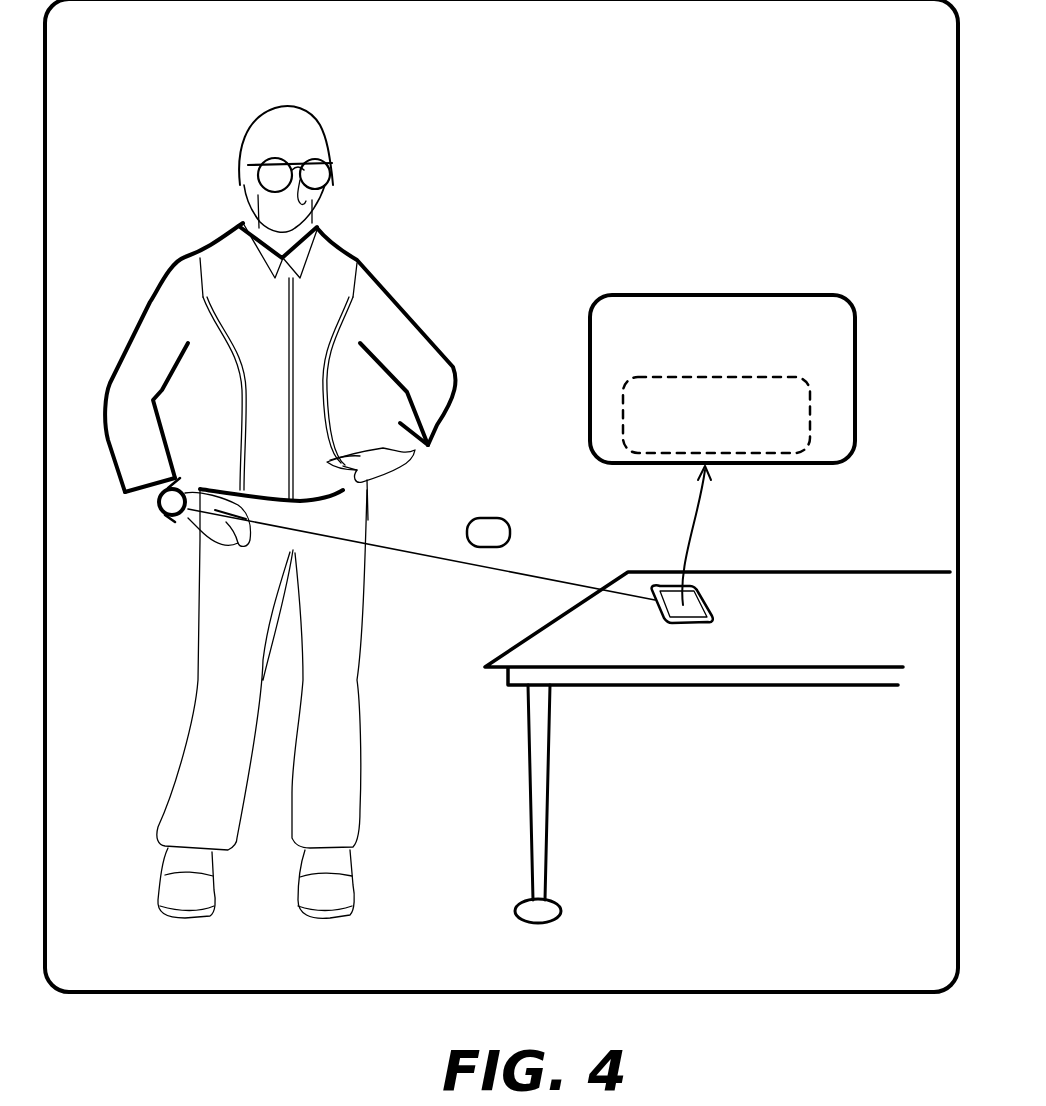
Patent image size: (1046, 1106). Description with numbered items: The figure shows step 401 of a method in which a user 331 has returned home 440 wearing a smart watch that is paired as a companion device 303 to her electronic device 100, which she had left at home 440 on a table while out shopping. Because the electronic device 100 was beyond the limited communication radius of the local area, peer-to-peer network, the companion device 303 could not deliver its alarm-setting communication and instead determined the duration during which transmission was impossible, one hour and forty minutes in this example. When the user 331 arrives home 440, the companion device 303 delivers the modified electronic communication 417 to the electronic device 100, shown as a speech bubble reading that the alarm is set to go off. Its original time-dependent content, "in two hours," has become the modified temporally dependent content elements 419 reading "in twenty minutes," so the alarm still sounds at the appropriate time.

The electronic device 100 is at (703, 600).
The companion device 303 is at (160, 518).
The user 331 is at (373, 313).
The step 401 is at (318, 992).
The modified electronic communication 417 is at (597, 460).
The modified temporally dependent content elements 419 is at (627, 403).
The home 440 is at (669, 154).